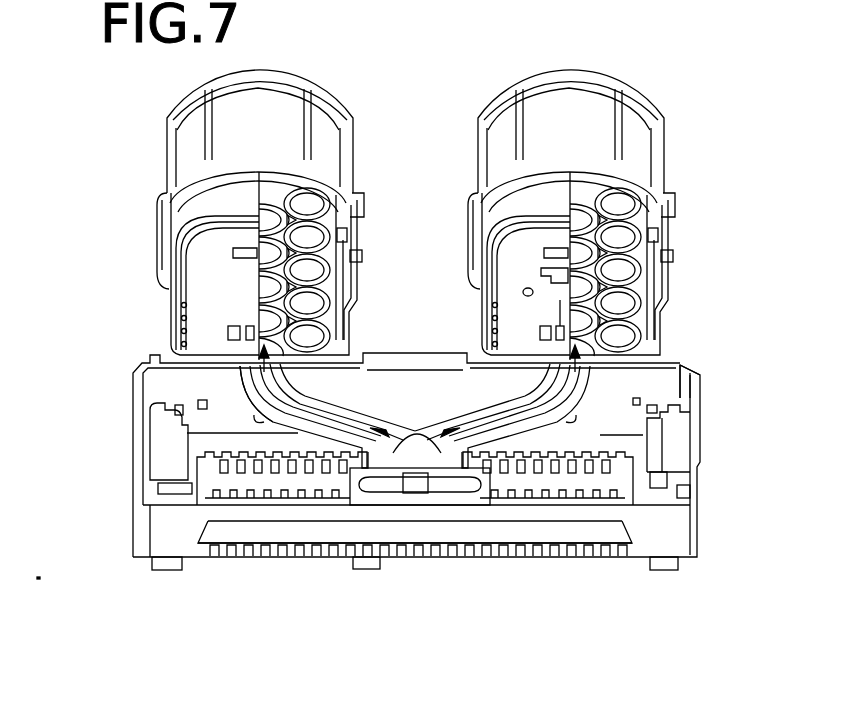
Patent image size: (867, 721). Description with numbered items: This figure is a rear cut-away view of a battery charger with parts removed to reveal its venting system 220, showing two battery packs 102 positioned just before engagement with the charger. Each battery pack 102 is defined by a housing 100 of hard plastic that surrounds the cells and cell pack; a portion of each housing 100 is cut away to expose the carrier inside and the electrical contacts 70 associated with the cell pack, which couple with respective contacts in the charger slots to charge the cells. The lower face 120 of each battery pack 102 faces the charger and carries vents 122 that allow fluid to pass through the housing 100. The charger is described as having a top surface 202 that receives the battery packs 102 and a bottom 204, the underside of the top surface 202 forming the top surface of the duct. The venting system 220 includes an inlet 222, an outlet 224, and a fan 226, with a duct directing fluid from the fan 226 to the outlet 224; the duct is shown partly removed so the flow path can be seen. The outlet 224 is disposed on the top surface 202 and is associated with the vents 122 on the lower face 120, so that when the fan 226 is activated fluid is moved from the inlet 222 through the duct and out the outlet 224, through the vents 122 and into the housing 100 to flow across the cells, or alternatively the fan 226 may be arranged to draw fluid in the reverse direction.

The housing 100 is at (636, 152).
The battery pack 102 is at (368, 186).
The lower face 120 is at (207, 287).
The vents 122 is at (228, 333).
The electrical contacts 70 is at (338, 282).
The top surface 202 is at (671, 348).
The bottom 204 is at (628, 388).
The venting system 220 is at (310, 446).
The inlet 222 is at (235, 553).
The outlet 224 is at (256, 364).
The fan 226 is at (490, 482).